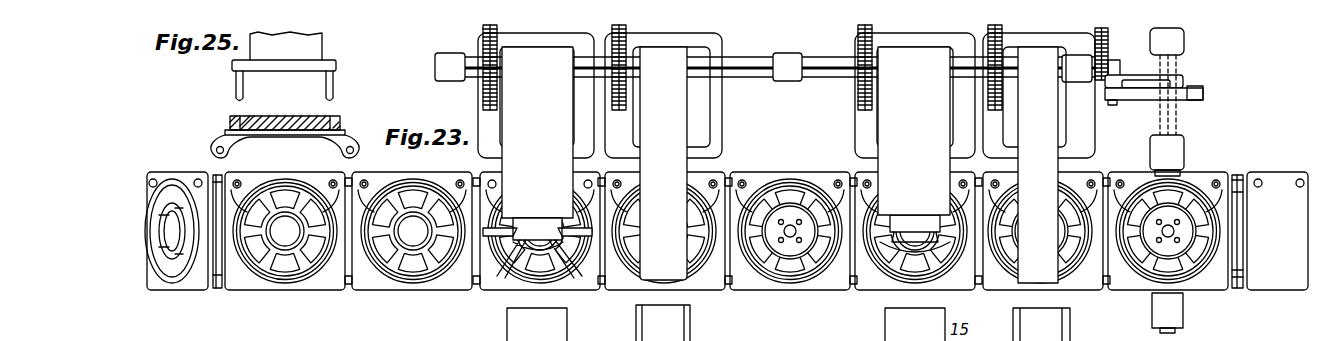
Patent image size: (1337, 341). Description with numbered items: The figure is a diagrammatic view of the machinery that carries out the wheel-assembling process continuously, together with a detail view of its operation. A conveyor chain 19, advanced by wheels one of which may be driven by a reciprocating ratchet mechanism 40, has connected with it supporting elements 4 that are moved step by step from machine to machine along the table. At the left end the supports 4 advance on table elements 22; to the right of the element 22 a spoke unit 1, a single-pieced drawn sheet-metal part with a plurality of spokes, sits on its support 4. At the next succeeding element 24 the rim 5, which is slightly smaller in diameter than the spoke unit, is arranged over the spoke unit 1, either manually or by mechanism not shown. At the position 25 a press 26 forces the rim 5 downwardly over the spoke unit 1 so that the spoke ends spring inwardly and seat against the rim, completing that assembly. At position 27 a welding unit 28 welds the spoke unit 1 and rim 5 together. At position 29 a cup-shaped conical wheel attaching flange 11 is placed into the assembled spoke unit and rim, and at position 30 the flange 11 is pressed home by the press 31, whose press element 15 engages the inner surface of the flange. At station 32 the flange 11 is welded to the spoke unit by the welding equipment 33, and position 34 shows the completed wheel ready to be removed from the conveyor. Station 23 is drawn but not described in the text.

In FIG. 23, the spoke unit 1 is at (285, 264).
In FIG. 25, the support 4 is at (342, 130).
In FIG. 23, the support 4 is at (180, 286).
In FIG. 23, the rim 5 is at (390, 280).
In FIG. 23, the wheel attaching flange 11 is at (792, 214).
In FIG. 23, the press element 15 is at (922, 222).
In FIG. 23, the conveyor chain 19 is at (219, 284).
In FIG. 25, the table element 22 is at (226, 138).
In FIG. 23, the table element 22 is at (192, 286).
In FIG. 23, the first station 23 is at (336, 284).
In FIG. 23, the succeeding element 24 is at (455, 284).
In FIG. 23, the press position 25 is at (592, 286).
In FIG. 23, the press 26 is at (535, 130).
In FIG. 23, the welding position 27 is at (712, 288).
In FIG. 23, the welding unit 28 is at (672, 135).
In FIG. 23, the flange placing position 29 is at (834, 288).
In FIG. 23, the flange pressing position 30 is at (958, 288).
In FIG. 23, the press 31 is at (895, 138).
In FIG. 23, the flange welding station 32 is at (1083, 290).
In FIG. 23, the welding equipment 33 is at (1056, 131).
In FIG. 23, the completed wheel position 34 is at (1208, 288).
In FIG. 23, the reciprocating ratchet mechanism 40 is at (1128, 70).